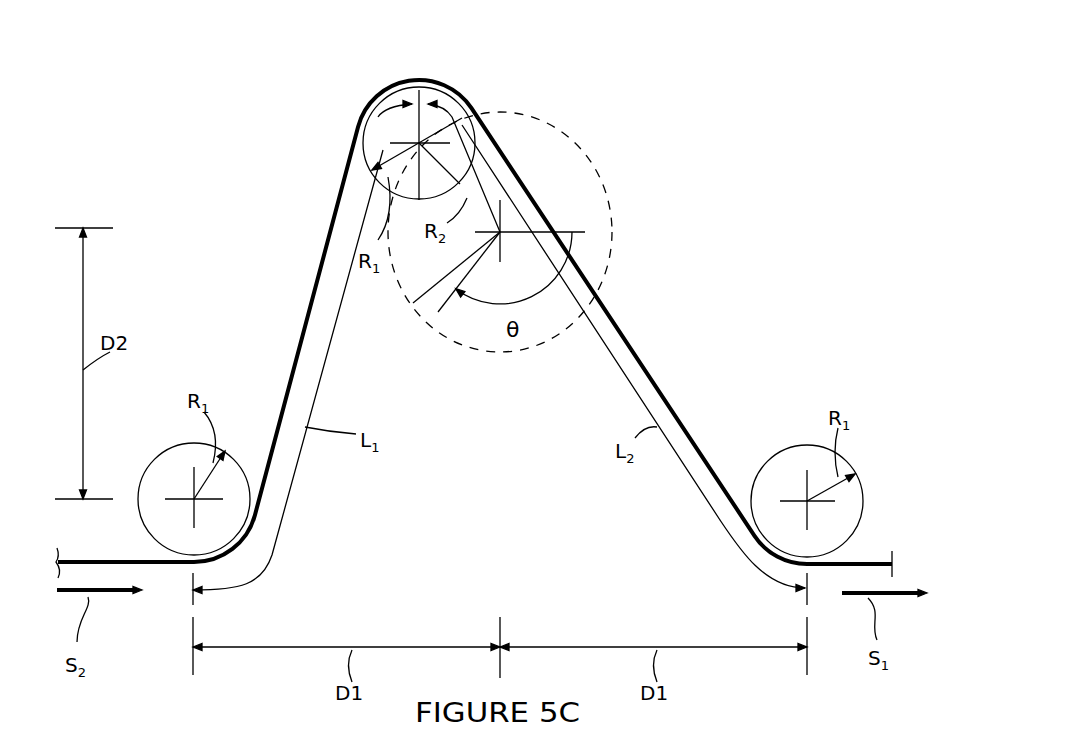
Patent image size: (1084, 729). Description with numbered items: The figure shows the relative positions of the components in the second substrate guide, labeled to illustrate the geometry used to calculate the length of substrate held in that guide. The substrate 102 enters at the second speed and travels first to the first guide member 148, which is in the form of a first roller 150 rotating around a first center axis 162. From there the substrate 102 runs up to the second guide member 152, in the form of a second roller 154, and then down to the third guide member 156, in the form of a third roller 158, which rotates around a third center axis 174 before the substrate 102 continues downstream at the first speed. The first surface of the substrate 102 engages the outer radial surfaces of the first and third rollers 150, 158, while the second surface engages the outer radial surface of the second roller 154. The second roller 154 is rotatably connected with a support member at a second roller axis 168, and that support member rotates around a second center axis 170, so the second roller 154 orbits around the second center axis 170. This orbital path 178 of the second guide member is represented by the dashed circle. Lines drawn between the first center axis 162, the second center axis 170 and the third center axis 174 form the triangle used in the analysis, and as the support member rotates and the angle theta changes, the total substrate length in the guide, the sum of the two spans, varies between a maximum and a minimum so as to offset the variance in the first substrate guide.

The substrate 102 is at (110, 562).
The first guide member 148 is at (212, 414).
The first roller 150 is at (194, 414).
The second guide member 152 is at (436, 142).
The second roller 154 is at (388, 145).
The third guide member 156 is at (829, 453).
The third roller 158 is at (838, 470).
The first center axis 162 is at (180, 455).
The second roller axis 168 is at (405, 112).
The second center axis 170 is at (413, 303).
The third center axis 174 is at (812, 503).
The orbital path 178 is at (465, 345).